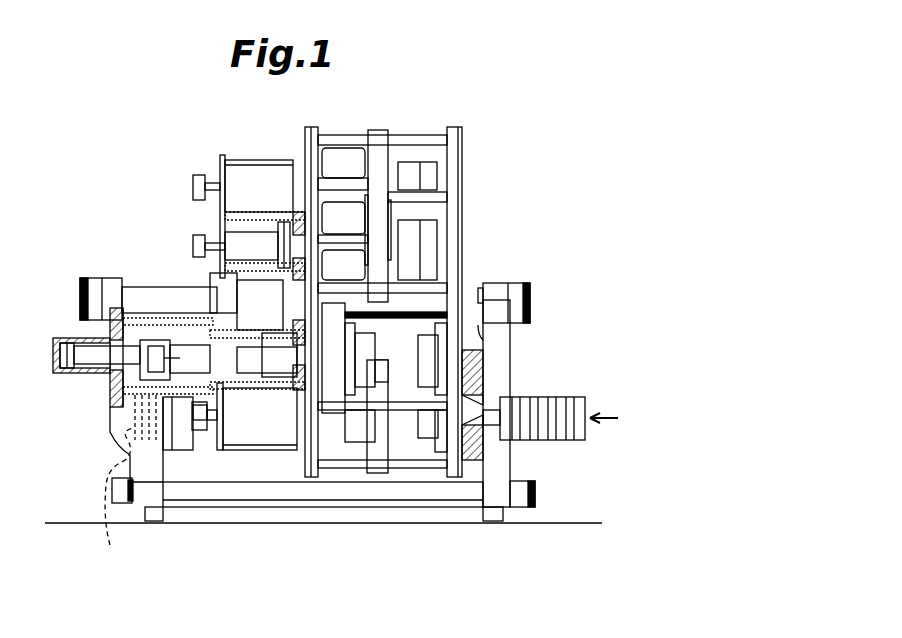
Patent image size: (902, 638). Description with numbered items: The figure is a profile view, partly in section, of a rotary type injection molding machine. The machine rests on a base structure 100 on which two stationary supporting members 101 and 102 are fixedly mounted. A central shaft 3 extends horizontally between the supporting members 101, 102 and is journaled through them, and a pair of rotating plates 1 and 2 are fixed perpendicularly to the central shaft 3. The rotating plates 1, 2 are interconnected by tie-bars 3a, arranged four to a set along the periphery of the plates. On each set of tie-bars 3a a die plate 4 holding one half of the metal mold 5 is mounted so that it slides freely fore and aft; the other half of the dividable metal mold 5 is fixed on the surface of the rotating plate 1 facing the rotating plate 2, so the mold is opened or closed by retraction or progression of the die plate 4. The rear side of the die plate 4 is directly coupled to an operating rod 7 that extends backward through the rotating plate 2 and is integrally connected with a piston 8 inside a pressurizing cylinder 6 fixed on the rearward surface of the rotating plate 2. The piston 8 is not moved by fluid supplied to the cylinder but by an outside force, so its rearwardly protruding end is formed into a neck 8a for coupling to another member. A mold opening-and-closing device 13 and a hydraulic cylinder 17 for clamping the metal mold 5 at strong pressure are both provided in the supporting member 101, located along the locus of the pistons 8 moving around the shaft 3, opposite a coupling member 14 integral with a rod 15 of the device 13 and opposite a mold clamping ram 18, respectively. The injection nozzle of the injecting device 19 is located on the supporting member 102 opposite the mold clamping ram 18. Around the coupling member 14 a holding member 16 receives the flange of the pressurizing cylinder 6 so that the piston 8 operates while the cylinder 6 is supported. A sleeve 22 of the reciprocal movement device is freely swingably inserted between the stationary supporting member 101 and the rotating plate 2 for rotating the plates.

The rotating plate 1 is at (452, 140).
The rotating plate 2 is at (310, 140).
The central shaft 3 is at (490, 290).
The tie-bars 3a is at (355, 140).
The die plate 4 is at (378, 140).
The metal mold 5 is at (432, 178).
The pressurizing cylinder 6 is at (258, 165).
The operating rod 7 is at (345, 208).
The piston 8 is at (200, 243).
The neck 8a is at (202, 183).
The mold opening-and-closing device 13 is at (58, 338).
The coupling member 14 is at (140, 368).
The rod 15 is at (95, 300).
The holding member 16 is at (140, 420).
The hydraulic cylinder 17 is at (116, 498).
The mold clamping ram 18 is at (177, 427).
The injecting device 19 is at (567, 440).
The sleeve 22 is at (217, 287).
The base structure 100 is at (98, 521).
The stationary supporting member 101 is at (112, 418).
The stationary supporting member 102 is at (512, 345).